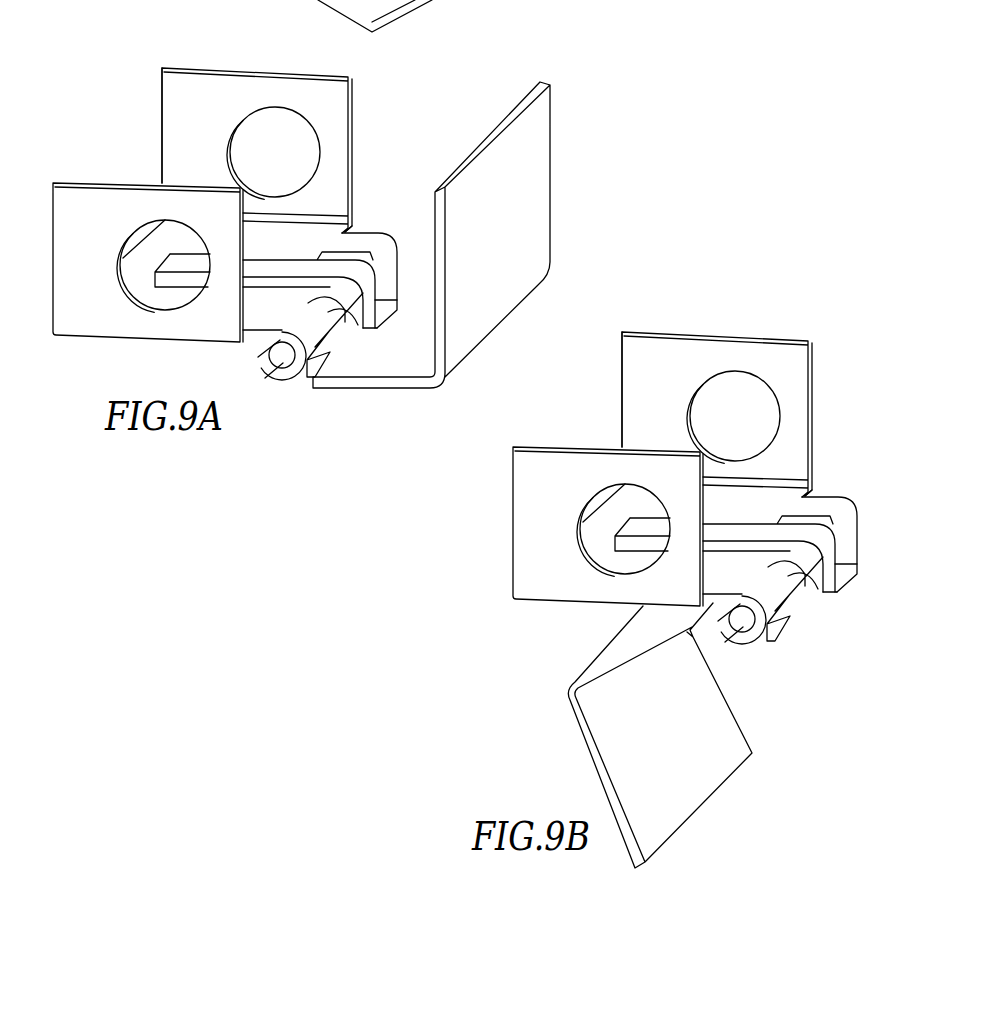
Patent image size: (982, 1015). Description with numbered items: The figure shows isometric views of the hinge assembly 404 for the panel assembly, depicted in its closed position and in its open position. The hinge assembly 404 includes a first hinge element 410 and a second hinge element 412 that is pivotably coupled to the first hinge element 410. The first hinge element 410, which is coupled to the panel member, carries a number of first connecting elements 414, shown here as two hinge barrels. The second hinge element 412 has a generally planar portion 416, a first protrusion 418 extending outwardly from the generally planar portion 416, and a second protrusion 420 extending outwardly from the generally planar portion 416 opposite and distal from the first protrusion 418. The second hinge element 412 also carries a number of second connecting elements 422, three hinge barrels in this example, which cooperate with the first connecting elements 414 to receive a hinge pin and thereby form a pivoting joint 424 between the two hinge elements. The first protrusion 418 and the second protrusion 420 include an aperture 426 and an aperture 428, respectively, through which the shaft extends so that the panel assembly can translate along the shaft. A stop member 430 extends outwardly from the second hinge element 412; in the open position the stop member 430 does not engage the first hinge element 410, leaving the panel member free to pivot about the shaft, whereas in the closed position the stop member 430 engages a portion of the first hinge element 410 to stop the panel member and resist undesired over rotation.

In FIG. 9A, the hinge assembly 404 is at (105, 372).
In FIG. 9B, the hinge assembly 404 is at (593, 613).
In FIG. 9A, the first hinge element 410 is at (368, 397).
In FIG. 9B, the first hinge element 410 is at (567, 737).
In FIG. 9A, the second hinge element 412 is at (158, 88).
In FIG. 9B, the second hinge element 412 is at (593, 386).
In FIG. 9A, the first connecting elements 414 is at (330, 313).
In FIG. 9B, the first connecting elements 414 is at (800, 615).
In FIG. 9A, the generally planar portion 416 is at (282, 252).
In FIG. 9B, the generally planar portion 416 is at (770, 542).
In FIG. 9A, the first protrusion 418 is at (231, 90).
In FIG. 9B, the first protrusion 418 is at (717, 392).
In FIG. 9A, the second protrusion 420 is at (90, 192).
In FIG. 9B, the second protrusion 420 is at (577, 526).
In FIG. 9A, the second connecting elements 422 is at (377, 247).
In FIG. 9B, the second connecting elements 422 is at (793, 579).
In FIG. 9A, the pivoting joint 424 is at (357, 223).
In FIG. 9B, the pivoting joint 424 is at (830, 457).
In FIG. 9A, the aperture 426 is at (301, 128).
In FIG. 9B, the aperture 426 is at (736, 406).
In FIG. 9A, the aperture 428 is at (130, 268).
In FIG. 9B, the aperture 428 is at (628, 518).
In FIG. 9A, the stop member 430 is at (393, 287).
In FIG. 9B, the stop member 430 is at (842, 598).